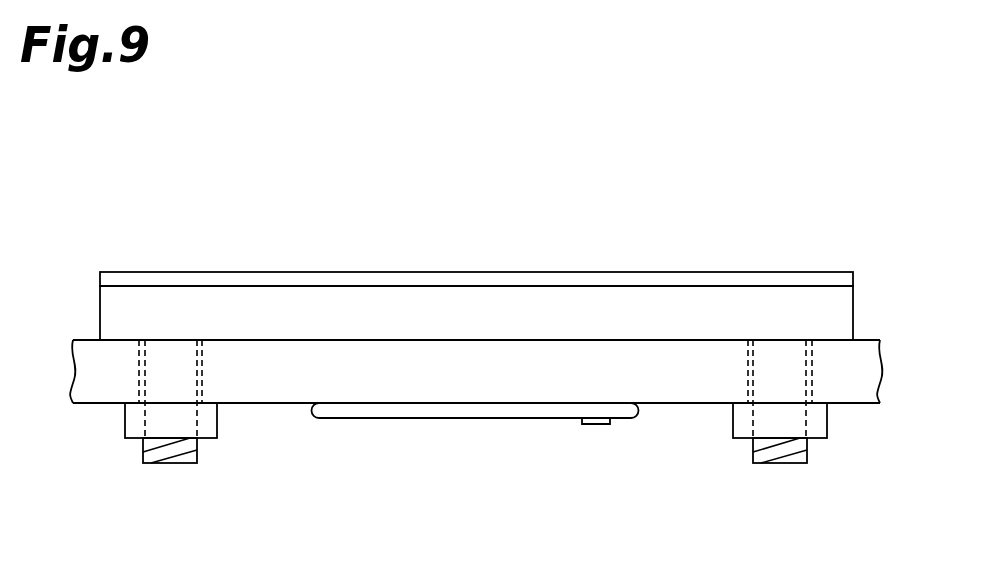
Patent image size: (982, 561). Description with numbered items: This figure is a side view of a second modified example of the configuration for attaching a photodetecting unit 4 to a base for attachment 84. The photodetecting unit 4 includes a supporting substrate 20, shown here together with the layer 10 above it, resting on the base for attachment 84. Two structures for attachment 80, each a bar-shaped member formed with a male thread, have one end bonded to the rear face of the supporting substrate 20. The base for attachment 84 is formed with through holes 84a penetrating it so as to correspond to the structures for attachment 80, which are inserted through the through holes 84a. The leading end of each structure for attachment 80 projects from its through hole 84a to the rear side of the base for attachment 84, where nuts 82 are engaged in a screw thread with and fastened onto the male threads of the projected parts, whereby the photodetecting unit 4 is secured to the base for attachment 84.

The photodetecting unit 4 is at (834, 178).
The cover member 10 is at (360, 281).
The supporting substrate 20 is at (659, 301).
The structure for attachment 80 is at (170, 465).
The nut 82 is at (125, 438).
The base for attachment 84 is at (470, 372).
The through hole 84a is at (141, 393).